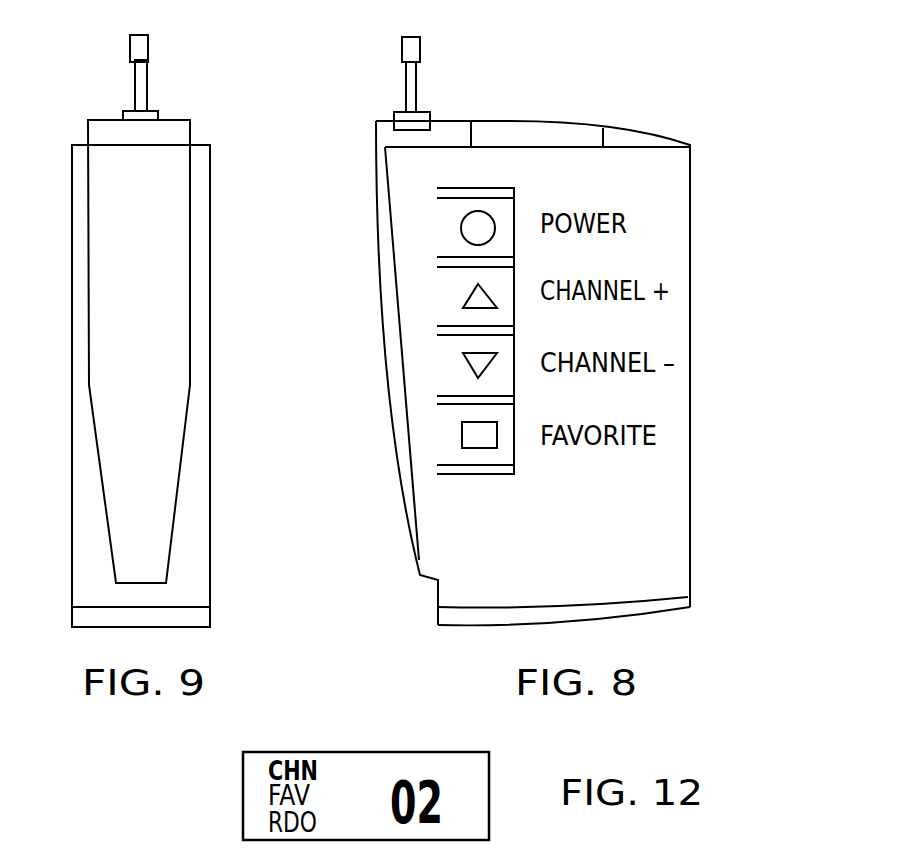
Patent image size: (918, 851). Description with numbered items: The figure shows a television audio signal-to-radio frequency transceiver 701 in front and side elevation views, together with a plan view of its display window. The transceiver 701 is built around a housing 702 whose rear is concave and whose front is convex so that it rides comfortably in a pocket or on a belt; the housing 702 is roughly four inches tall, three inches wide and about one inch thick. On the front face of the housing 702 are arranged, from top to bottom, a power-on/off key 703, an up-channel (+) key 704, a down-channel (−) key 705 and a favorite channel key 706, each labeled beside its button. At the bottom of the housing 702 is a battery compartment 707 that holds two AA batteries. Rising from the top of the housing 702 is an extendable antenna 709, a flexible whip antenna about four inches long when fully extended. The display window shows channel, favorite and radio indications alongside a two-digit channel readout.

In FIG. 9, the television audio signal-to-radio frequency transceiver 701 is at (90, 104).
In FIG. 8, the television audio signal-to-radio frequency transceiver 701 is at (700, 138).
In FIG. 9, the housing 702 is at (197, 165).
In FIG. 8, the housing 702 is at (537, 128).
In FIG. 8, the power-on/off key 703 is at (478, 223).
In FIG. 8, the up-channel (+) key 704 is at (478, 300).
In FIG. 8, the down-channel (−) key 705 is at (478, 362).
In FIG. 8, the favorite channel key 706 is at (478, 430).
In FIG. 9, the battery compartment 707 is at (192, 617).
In FIG. 8, the battery compartment 707 is at (683, 600).
In FIG. 9, the extendable antenna 709 is at (143, 50).
In FIG. 8, the extendable antenna 709 is at (418, 52).